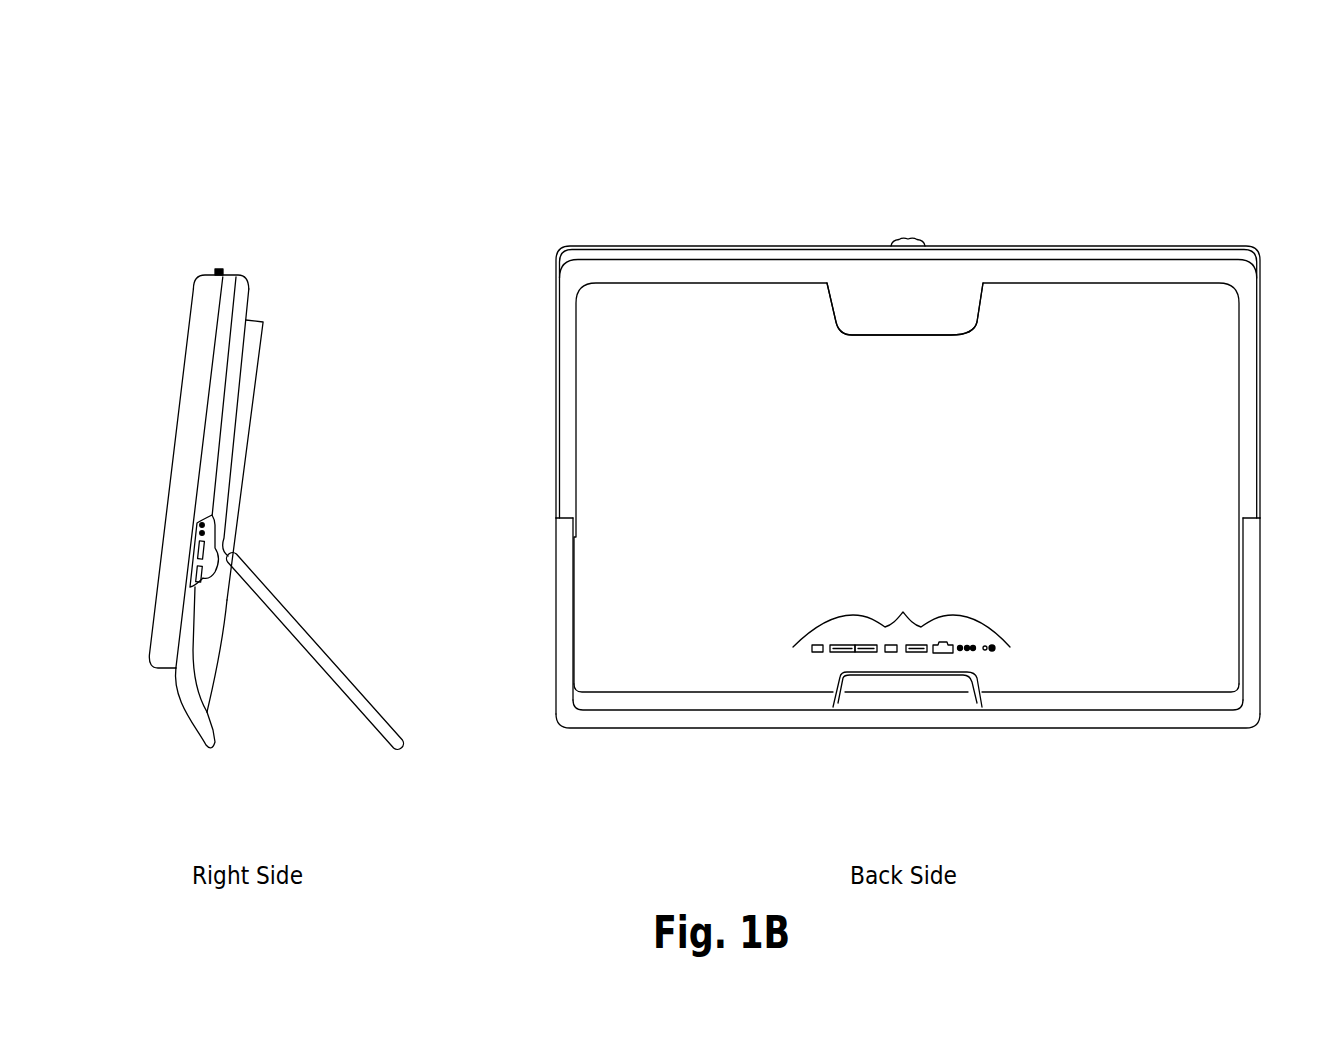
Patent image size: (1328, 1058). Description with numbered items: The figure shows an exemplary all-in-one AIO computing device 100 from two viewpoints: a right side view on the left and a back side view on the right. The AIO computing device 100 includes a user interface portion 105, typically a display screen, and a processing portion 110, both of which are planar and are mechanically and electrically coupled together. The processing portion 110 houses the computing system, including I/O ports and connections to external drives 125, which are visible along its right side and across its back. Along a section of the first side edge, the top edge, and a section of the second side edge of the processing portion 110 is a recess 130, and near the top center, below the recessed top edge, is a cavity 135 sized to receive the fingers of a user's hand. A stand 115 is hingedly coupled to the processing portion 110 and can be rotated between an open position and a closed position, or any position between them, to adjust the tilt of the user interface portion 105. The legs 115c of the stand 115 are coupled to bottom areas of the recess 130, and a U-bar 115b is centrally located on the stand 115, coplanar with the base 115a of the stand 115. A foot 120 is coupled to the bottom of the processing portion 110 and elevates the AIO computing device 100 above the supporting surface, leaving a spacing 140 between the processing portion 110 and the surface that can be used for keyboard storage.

The AIO computing device 100 is at (710, 427).
The user interface portion 105 is at (198, 280).
The processing portion 110 is at (247, 273).
The stand 115 is at (764, 649).
The base 115a is at (652, 720).
The U-bar 115b is at (830, 704).
The legs 115c is at (1253, 623).
The foot 120 is at (190, 721).
The I/O ports and connections to external drives 125 is at (205, 531).
The recess 130 is at (253, 307).
The cavity 135 is at (948, 318).
The spacing 140 is at (598, 701).